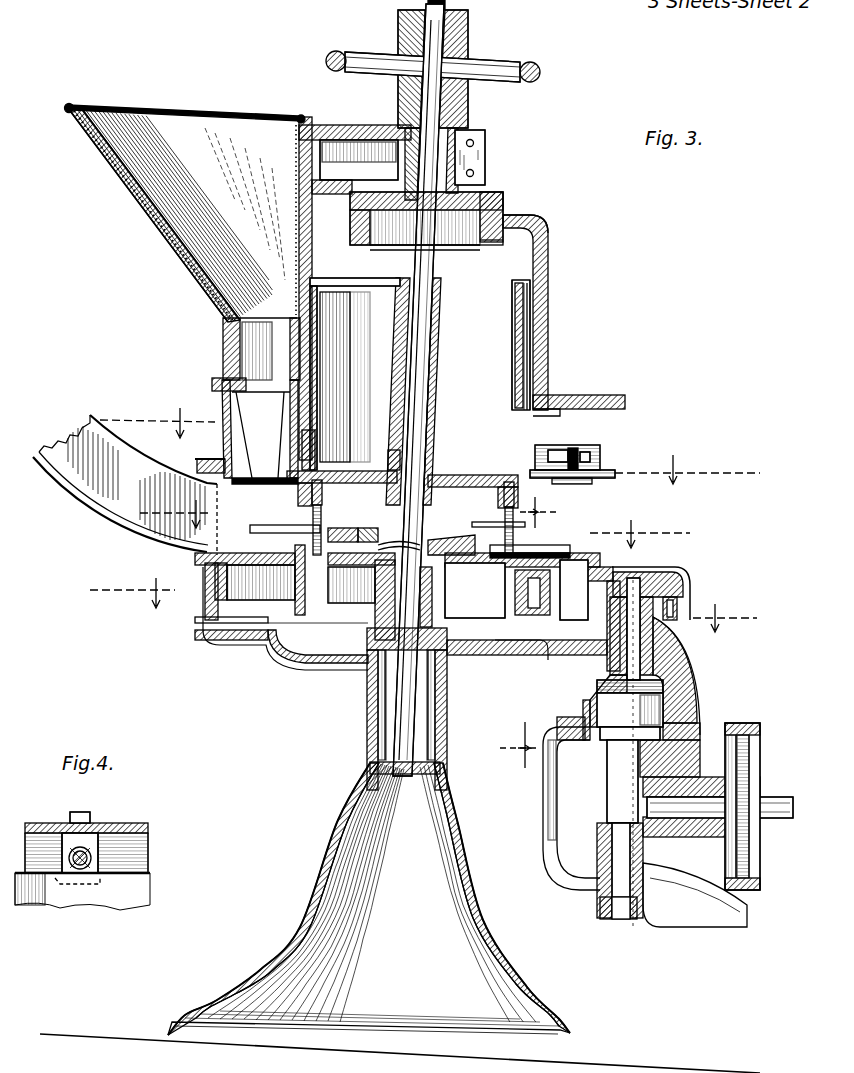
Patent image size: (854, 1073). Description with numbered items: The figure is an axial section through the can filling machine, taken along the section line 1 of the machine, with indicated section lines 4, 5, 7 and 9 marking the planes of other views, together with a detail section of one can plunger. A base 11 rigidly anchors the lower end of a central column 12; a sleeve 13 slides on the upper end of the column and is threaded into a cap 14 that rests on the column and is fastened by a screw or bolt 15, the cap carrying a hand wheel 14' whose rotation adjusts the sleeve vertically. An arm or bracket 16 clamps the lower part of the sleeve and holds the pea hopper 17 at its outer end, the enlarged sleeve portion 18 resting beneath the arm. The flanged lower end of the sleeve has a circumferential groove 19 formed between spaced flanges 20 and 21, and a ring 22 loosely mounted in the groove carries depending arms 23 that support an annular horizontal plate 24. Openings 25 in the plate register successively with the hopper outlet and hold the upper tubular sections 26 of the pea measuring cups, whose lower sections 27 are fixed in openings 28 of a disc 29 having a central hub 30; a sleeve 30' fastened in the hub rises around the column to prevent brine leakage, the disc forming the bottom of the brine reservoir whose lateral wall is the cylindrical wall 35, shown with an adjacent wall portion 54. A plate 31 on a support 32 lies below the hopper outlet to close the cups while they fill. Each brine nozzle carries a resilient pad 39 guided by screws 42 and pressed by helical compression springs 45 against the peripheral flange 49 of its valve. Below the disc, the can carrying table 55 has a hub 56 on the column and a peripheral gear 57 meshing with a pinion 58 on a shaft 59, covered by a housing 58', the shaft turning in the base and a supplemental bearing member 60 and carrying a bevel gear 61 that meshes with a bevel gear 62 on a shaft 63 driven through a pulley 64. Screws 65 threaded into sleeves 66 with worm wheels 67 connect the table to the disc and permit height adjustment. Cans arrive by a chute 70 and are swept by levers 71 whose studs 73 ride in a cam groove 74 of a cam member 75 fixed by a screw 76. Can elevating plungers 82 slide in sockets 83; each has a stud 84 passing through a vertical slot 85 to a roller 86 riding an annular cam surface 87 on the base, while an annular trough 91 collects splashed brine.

In FIG. 3, the lever 1 is at (355, 630).
In FIG. 3, the section line 4- 4 is at (530, 629).
In FIG. 3, the section line 5- 5 is at (430, 439).
In FIG. 3, the section line 7- 7 is at (415, 516).
In FIG. 3, the section line 9- 9 is at (423, 599).
In FIG. 3, the base 11 is at (475, 908).
In FIG. 3, the column 12 is at (438, 393).
In FIG. 3, the sleeve 13 is at (488, 132).
In FIG. 3, the cap 14 is at (423, 105).
In FIG. 3, the hand wheel 14' is at (551, 71).
In FIG. 3, the screw or bolt 15 is at (428, 5).
In FIG. 3, the arm or bracket 16 is at (352, 124).
In FIG. 3, the pea hopper 17 is at (178, 228).
In FIG. 3, the hub block 18 is at (426, 218).
In FIG. 3, the circumferential groove 19 is at (478, 247).
In FIG. 3, the flange 20 is at (490, 244).
In FIG. 3, the flange 21 is at (503, 195).
In FIG. 3, the ring 22 is at (525, 215).
In FIG. 3, the arms 23 is at (355, 262).
In FIG. 3, the annular horizontal plate 24 is at (560, 398).
In FIG. 3, the openings 25 is at (222, 375).
In FIG. 3, the upper tubular sections 26 is at (212, 385).
In FIG. 3, the lower sections 27 is at (222, 440).
In FIG. 3, the openings 28 is at (290, 480).
In FIG. 3, the disc 29 is at (315, 455).
In FIG. 3, the hub 30 is at (380, 450).
In FIG. 3, the sleeve 30' is at (435, 391).
In FIG. 3, the plate 31 is at (245, 484).
In FIG. 3, the support 32 is at (197, 466).
In FIG. 3, the cylindrical wall 35 is at (318, 356).
In FIG. 3, the resilient pad 39 is at (612, 478).
In FIG. 3, the screws 42 is at (590, 447).
In FIG. 3, the helical compression springs 45 is at (590, 465).
In FIG. 3, the peripheral flange 49 is at (585, 486).
In FIG. 3, the cylinder liner 54 is at (528, 372).
In FIG. 3, the can carrying table 55 is at (208, 555).
In FIG. 4, the can carrying table 55 is at (30, 823).
In FIG. 3, the hub 56 is at (432, 618).
In FIG. 3, the gear 57 is at (630, 578).
In FIG. 3, the pinion 58 is at (667, 622).
In FIG. 3, the housing 58' is at (679, 574).
In FIG. 3, the shaft 59 is at (655, 652).
In FIG. 3, the supplemental bearing member 60 is at (545, 790).
In FIG. 3, the bevel gear 61 is at (505, 640).
In FIG. 3, the bevel gear 62 is at (698, 738).
In FIG. 3, the shaft 63 is at (770, 820).
In FIG. 3, the pulley 64 is at (748, 722).
In FIG. 3, the screws 65 is at (330, 510).
In FIG. 3, the internally threaded sleeves 66 is at (260, 580).
In FIG. 3, the worm wheels 67 is at (380, 588).
In FIG. 3, the chute 70 is at (88, 520).
In FIG. 3, the levers 71 is at (300, 520).
In FIG. 3, the studs 73 is at (345, 524).
In FIG. 3, the cam groove 74 is at (367, 524).
In FIG. 3, the cam member 75 is at (396, 530).
In FIG. 3, the screw 76 is at (435, 545).
In FIG. 3, the can elevating plungers 82 is at (580, 570).
In FIG. 4, the can elevating plungers 82 is at (90, 812).
In FIG. 3, the socket or guide 83 is at (532, 592).
In FIG. 4, the socket or guide 83 is at (135, 824).
In FIG. 3, the stud 84 is at (530, 640).
In FIG. 3, the vertical slot 85 is at (540, 665).
In FIG. 4, the vertical slot 85 is at (70, 835).
In FIG. 4, the roller 86 is at (120, 888).
In FIG. 3, the annular cam surface 87 is at (460, 625).
In FIG. 4, the annular cam surface 87 is at (130, 872).
In FIG. 3, the annular trough 91 is at (220, 647).